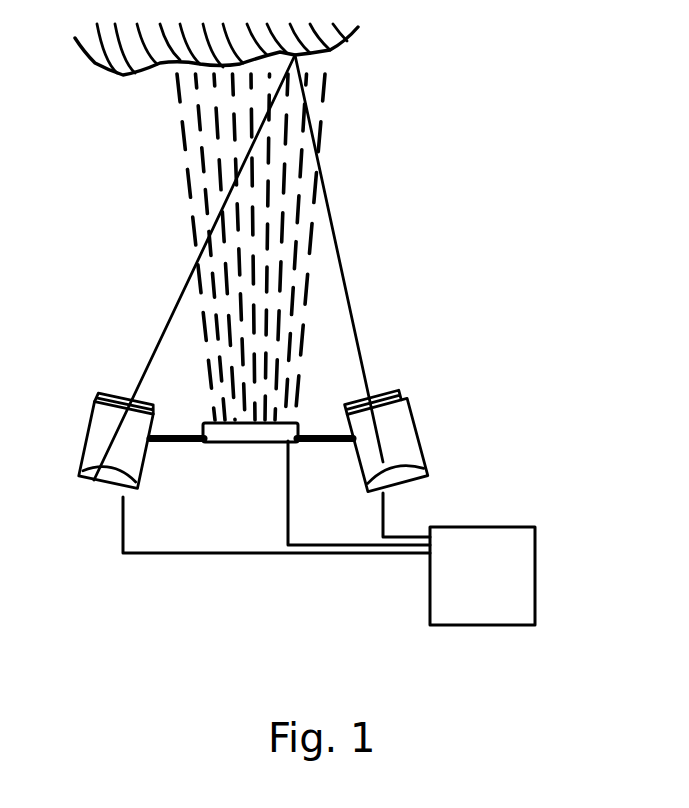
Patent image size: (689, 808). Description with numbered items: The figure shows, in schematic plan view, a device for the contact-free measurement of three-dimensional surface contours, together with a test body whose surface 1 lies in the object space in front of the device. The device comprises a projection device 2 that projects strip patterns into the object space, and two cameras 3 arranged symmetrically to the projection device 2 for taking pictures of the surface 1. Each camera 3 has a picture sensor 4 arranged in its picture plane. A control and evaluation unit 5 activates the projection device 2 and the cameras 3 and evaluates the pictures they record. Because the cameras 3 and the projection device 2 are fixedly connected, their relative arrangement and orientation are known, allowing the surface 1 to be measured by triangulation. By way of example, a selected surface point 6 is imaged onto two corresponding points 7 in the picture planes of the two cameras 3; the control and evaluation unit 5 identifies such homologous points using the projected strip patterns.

The surface 1 is at (160, 68).
The projection device 2 is at (237, 447).
The cameras 3 is at (92, 428).
The picture sensor 4 is at (108, 490).
The control and evaluation unit 5 is at (535, 560).
The surface point 6 is at (318, 66).
The corresponding points 7 is at (373, 483).